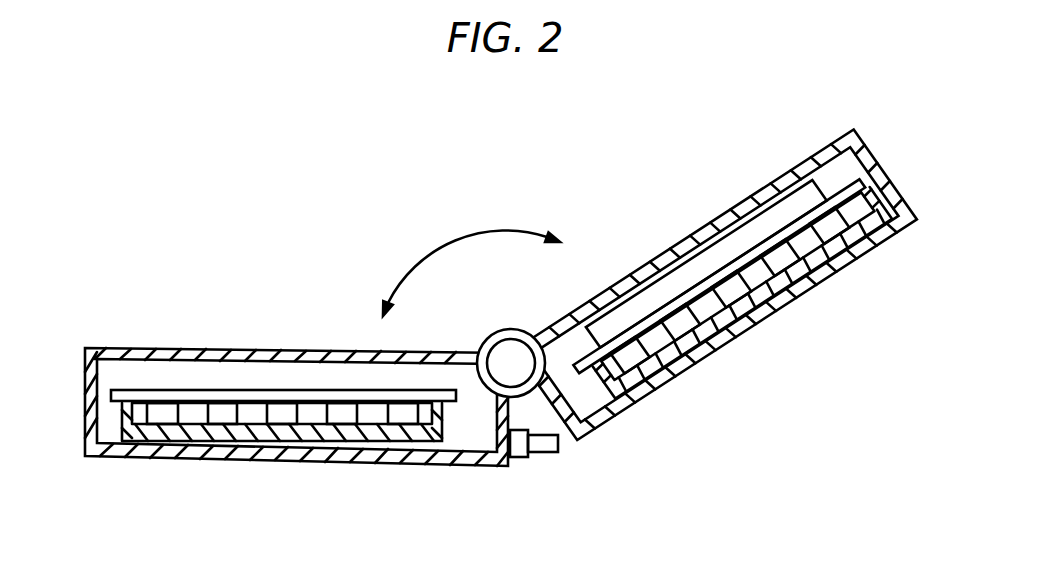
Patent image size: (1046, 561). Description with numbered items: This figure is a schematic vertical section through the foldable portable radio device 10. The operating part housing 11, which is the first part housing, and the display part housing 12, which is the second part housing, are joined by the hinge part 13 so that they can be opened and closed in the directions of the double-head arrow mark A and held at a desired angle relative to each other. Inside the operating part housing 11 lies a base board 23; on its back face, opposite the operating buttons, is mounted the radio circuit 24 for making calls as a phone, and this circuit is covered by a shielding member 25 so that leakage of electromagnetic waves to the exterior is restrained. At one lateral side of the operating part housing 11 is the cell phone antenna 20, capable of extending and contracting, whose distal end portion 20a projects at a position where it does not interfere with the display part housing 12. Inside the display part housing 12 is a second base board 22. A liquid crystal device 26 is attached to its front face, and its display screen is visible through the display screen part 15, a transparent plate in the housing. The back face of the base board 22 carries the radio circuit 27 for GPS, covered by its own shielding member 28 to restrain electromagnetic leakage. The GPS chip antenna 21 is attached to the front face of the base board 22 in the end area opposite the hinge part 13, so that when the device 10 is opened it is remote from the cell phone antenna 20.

The portable radio device 10 is at (862, 113).
The operating part housing 11 is at (296, 407).
The display part housing 12 is at (717, 266).
The hinge part 13 is at (516, 370).
The display screen part 15 is at (652, 265).
The cell phone antenna 20 is at (518, 443).
The distal end portion of the antenna 20a is at (550, 445).
The chip antenna (GPS antenna) 21 is at (763, 224).
The base board 22 is at (858, 187).
The base board 23 is at (198, 398).
The radio circuit 24 is at (283, 416).
The shielding member 25 is at (355, 440).
The liquid crystal device 26 is at (638, 307).
The radio circuit for GPS 27 is at (678, 322).
The shielding member 28 is at (832, 248).
The double-head arrow mark A is at (447, 244).